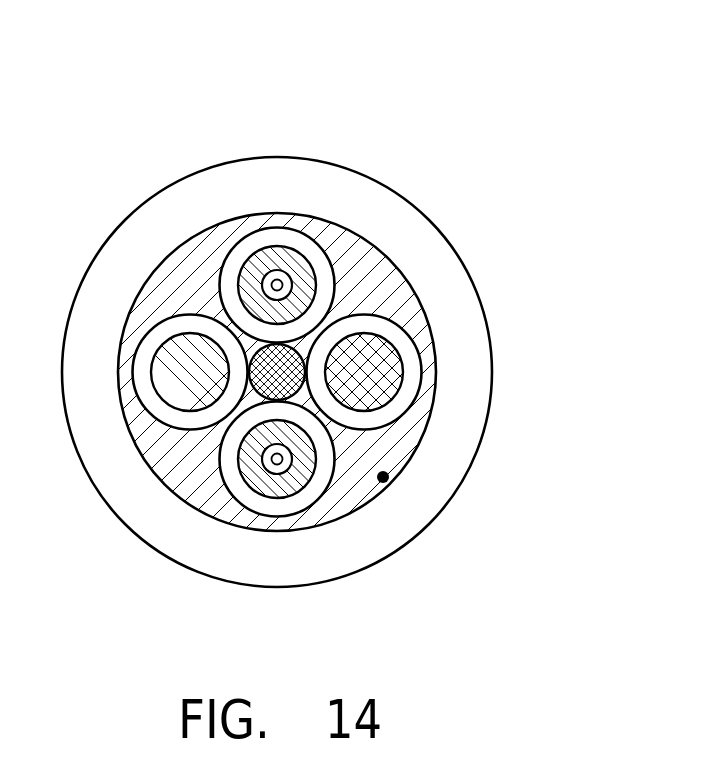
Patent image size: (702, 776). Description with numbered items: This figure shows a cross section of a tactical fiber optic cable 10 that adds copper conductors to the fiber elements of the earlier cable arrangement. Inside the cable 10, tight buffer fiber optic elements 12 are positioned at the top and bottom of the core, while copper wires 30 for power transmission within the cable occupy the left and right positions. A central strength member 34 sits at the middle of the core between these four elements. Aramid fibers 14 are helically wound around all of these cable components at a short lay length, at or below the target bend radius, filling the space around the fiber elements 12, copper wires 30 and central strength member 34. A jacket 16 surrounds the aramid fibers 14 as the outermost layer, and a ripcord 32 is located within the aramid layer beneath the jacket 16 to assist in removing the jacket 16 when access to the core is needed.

The fiber optic cable 10 is at (351, 388).
The tight buffer fiber optic element 12 is at (277, 285).
The aramid fibers 14 is at (377, 270).
The jacket 16 is at (473, 383).
The copper wires 30 is at (408, 322).
The ripcord 32 is at (383, 477).
The central strength member 34 is at (285, 388).